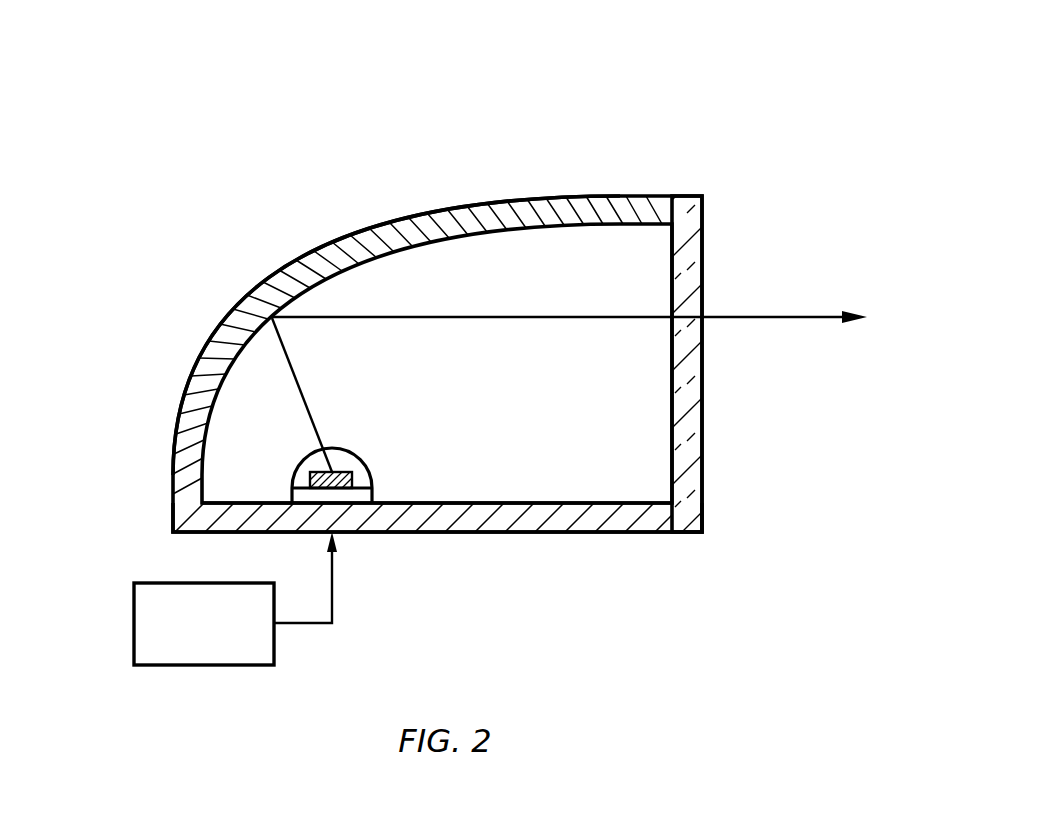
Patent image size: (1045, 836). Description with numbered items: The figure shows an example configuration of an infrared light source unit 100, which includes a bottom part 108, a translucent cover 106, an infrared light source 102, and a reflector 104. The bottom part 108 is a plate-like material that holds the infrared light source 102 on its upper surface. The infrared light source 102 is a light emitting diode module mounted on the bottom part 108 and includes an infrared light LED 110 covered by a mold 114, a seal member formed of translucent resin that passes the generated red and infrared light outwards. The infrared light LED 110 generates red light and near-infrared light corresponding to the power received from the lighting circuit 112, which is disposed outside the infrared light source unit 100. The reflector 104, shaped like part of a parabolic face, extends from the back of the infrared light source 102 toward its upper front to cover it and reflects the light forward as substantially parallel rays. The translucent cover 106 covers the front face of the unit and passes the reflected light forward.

The infrared light source unit 100 is at (748, 40).
The infrared light source 102 is at (384, 465).
The reflector 104 is at (508, 198).
The translucent cover 106 is at (705, 238).
The bottom part 108 is at (538, 534).
The infrared light LED 110 is at (354, 470).
The lighting circuit 112 is at (134, 620).
The mold 114 is at (297, 462).